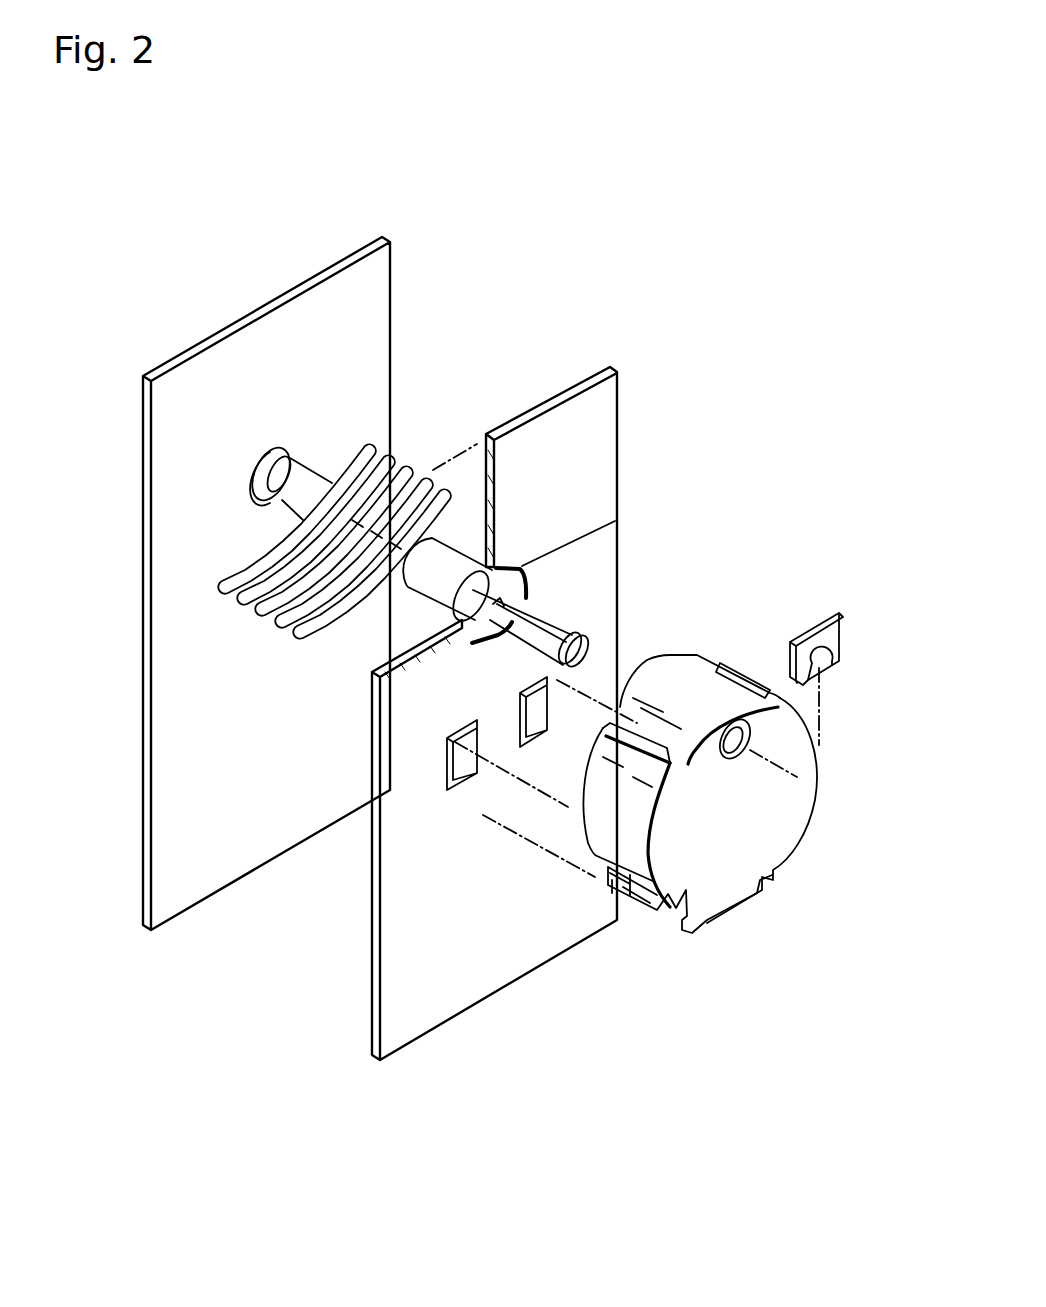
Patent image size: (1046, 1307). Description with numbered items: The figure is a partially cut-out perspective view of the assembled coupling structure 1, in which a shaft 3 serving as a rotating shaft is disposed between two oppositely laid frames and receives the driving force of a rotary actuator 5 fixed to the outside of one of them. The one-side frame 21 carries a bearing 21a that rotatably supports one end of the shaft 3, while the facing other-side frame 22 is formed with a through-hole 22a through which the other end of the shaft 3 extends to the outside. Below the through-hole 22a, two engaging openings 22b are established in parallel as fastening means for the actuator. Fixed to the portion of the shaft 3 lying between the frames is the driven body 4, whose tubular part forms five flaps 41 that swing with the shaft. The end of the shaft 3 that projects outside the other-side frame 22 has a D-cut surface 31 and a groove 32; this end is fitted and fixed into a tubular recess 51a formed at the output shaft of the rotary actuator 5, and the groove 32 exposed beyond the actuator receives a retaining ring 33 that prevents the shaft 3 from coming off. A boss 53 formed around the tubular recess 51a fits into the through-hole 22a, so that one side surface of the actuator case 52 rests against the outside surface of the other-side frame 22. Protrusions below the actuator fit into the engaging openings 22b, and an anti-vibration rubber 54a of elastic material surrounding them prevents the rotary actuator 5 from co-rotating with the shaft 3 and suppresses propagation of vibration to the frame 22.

The coupling structure 1 is at (605, 137).
The one-side frame 21 is at (215, 380).
The bearing 21a is at (250, 492).
The shaft 3 is at (275, 475).
The driven body 4 is at (312, 492).
The flaps 41 is at (226, 586).
The other-side frame 22 is at (397, 873).
The through-hole 22a is at (545, 620).
The engaging openings 22b is at (457, 790).
The D-cut surface 31 is at (511, 606).
The groove 32 is at (578, 633).
The rotary actuator 5 is at (598, 823).
The tubular recess 51a is at (740, 757).
The case 52 is at (718, 879).
The boss 53 is at (663, 660).
The anti-vibration rubber 54a is at (632, 890).
The retaining ring 33 is at (813, 627).